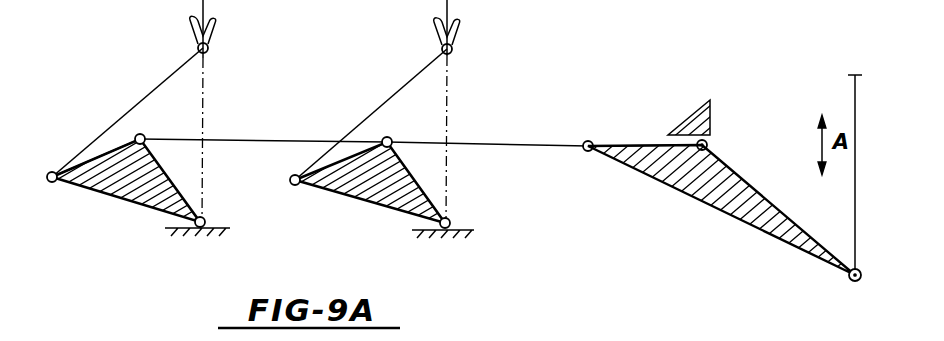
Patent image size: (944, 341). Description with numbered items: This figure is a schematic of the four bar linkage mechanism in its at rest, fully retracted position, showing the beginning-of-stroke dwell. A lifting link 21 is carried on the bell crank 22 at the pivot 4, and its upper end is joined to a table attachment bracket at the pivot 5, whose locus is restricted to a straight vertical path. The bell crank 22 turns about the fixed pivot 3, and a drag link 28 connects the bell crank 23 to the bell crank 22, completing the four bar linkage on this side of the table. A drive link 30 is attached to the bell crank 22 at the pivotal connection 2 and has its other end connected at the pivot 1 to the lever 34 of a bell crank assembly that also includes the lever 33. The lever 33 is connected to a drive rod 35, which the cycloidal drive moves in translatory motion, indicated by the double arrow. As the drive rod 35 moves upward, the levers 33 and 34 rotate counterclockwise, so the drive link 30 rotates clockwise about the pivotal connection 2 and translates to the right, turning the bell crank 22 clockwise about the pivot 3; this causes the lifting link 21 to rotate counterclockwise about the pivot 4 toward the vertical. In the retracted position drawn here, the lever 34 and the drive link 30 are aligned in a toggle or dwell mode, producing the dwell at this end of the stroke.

The pivot 1 is at (588, 141).
The pivotal connection 2 is at (143, 136).
The pivot 3 is at (206, 220).
The pivot 4 is at (52, 171).
The pivot 5 is at (209, 49).
The lifting link 21 is at (142, 99).
The bell crank 22 is at (352, 198).
The bell crank 23 is at (103, 197).
The drag link 28 is at (238, 138).
The drive link 30 is at (547, 147).
The lever 33 is at (747, 182).
The lever 34 is at (632, 142).
The drive rod 35 is at (853, 87).